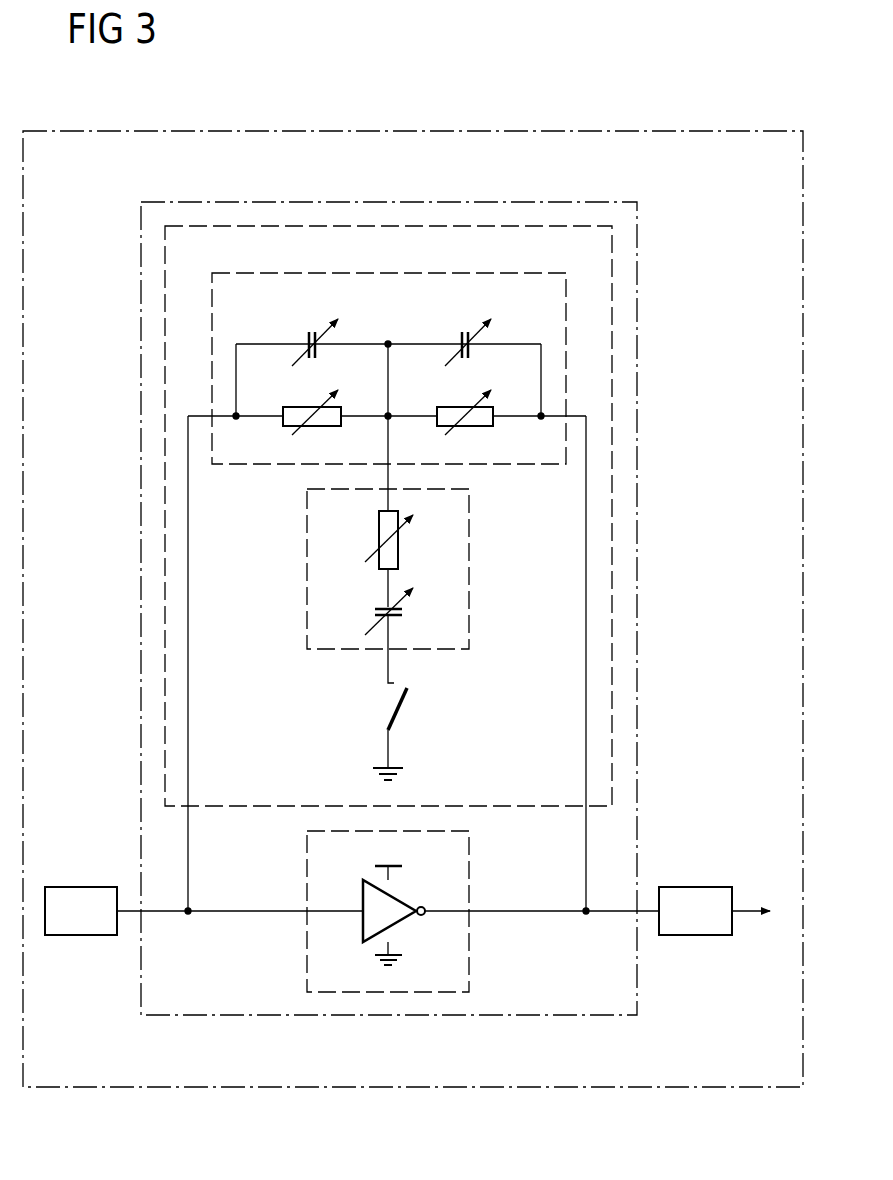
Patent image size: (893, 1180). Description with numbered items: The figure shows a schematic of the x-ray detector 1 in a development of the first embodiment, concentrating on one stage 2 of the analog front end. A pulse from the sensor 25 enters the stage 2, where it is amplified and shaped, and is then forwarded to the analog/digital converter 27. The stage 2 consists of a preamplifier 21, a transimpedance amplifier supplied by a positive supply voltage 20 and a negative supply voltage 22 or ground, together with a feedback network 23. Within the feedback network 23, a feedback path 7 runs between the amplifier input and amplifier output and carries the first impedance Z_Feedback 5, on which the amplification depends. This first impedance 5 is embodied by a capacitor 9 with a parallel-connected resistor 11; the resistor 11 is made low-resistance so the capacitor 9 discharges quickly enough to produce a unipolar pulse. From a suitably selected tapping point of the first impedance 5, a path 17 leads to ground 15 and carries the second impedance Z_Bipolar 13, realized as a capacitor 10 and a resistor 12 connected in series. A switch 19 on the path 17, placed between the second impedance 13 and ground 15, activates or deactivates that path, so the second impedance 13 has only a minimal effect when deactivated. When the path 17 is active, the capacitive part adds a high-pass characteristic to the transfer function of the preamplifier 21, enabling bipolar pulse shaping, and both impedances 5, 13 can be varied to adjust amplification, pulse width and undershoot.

The x-ray detector 1 is at (440, 131).
The one stage 2 is at (358, 202).
The feedback network 23 is at (455, 226).
The first impedance Z_Feedback 5 is at (272, 465).
The capacitor 9 is at (310, 331).
The parallel-connected resistor 11 is at (300, 407).
The path 17 is at (388, 472).
The feedback path 7 is at (188, 680).
The second impedance Z_Bipolar 13 is at (469, 565).
The resistor 12 is at (379, 535).
The capacitor 10 is at (375, 610).
The switch 19 is at (398, 712).
The ground 15 is at (352, 775).
The preamplifier 21 is at (469, 937).
The positive supply voltage 20 is at (352, 862).
The negative supply voltage 22 is at (352, 960).
The sensor 25 is at (80, 935).
The analog/digital converter 27 is at (697, 935).